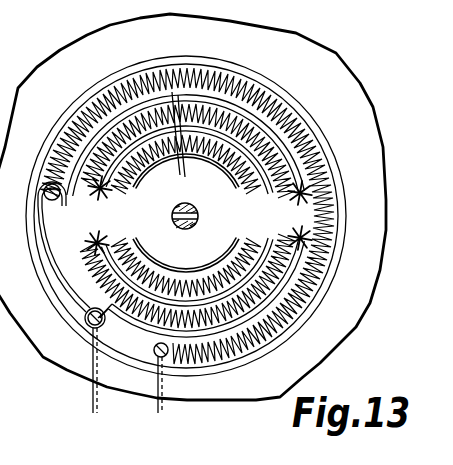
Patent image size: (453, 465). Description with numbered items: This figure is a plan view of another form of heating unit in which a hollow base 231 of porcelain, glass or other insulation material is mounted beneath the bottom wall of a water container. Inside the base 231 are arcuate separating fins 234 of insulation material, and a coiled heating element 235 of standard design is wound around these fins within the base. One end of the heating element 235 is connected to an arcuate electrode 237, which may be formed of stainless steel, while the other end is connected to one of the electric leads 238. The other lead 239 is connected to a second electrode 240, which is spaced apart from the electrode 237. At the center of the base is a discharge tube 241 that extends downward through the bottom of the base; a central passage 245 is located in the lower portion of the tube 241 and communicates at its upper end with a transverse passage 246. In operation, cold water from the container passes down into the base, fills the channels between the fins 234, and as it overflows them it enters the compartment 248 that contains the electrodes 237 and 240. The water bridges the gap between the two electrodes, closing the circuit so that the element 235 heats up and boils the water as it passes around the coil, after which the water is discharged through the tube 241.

The base 231 is at (336, 178).
The arcuate separating fins 234 is at (195, 140).
The coiled heating element 235 is at (134, 80).
The arcuate electrode 237 is at (48, 273).
The electric lead 238 is at (163, 408).
The electric lead 239 is at (97, 406).
The electrode 240 is at (78, 292).
The central discharge tube 241 is at (188, 229).
The central passage 245 is at (172, 216).
The transverse passage 246 is at (198, 216).
The compartment 248 is at (73, 273).